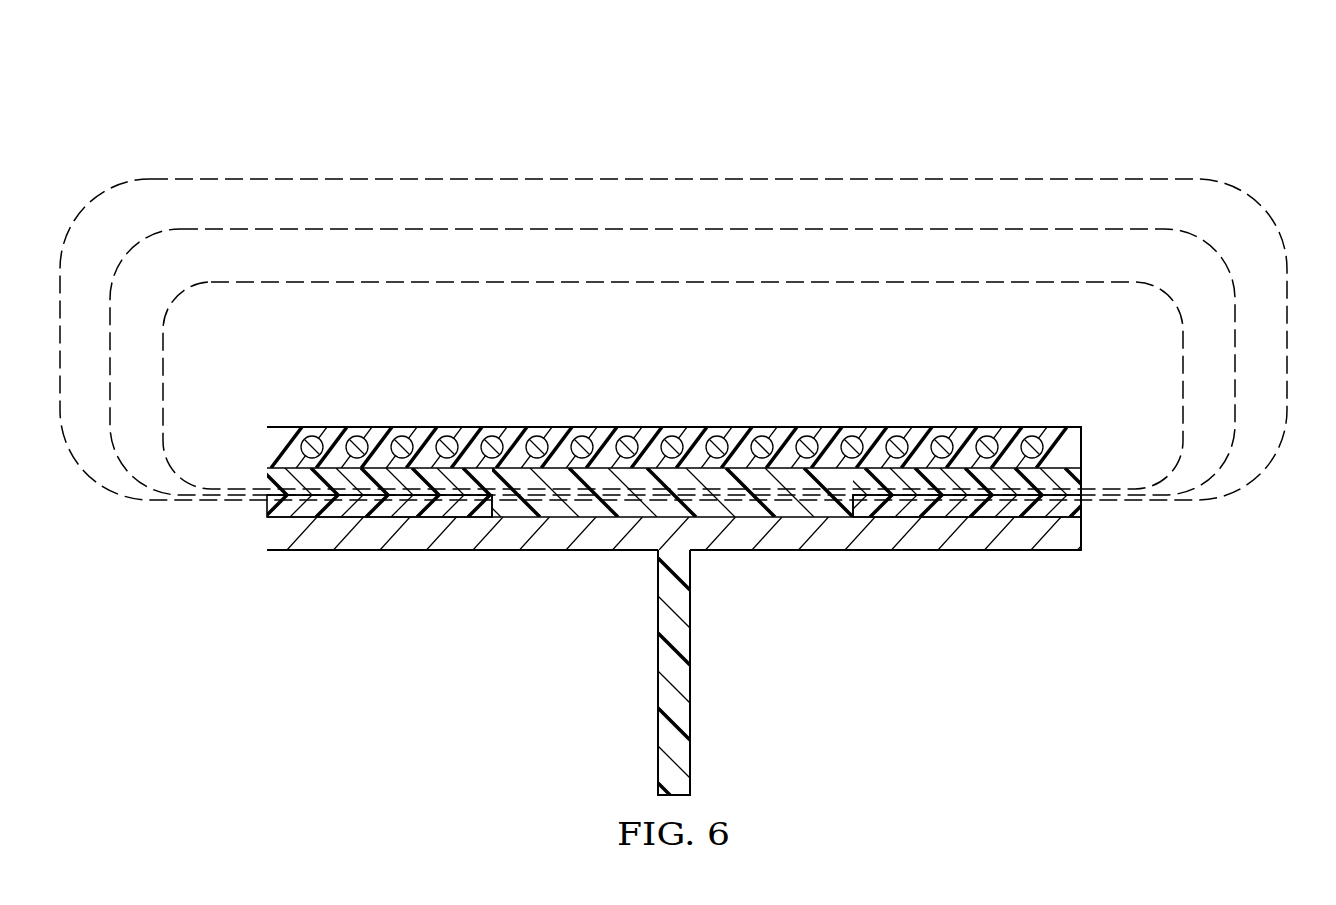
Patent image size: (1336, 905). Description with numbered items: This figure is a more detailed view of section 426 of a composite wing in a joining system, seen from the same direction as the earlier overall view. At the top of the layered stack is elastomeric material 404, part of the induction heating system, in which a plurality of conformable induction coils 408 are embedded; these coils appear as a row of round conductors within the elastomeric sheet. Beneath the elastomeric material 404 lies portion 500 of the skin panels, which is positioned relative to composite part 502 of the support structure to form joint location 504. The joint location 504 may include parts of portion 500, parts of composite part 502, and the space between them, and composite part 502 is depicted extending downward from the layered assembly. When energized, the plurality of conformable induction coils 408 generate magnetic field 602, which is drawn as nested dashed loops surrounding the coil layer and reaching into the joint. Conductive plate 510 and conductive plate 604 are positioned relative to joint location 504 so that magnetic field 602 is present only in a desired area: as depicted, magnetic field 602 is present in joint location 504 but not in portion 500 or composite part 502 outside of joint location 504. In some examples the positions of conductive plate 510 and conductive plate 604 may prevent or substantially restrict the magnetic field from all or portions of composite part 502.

The section 426 is at (313, 108).
The magnetic field 602 is at (473, 177).
The elastomeric material 404 is at (652, 427).
The plurality of conformable induction coils 408 is at (493, 438).
The portion 500 is at (267, 482).
The joint location 504 is at (240, 518).
The conductive plate 510 is at (403, 550).
The conductive plate 604 is at (940, 550).
The composite part 502 is at (657, 693).